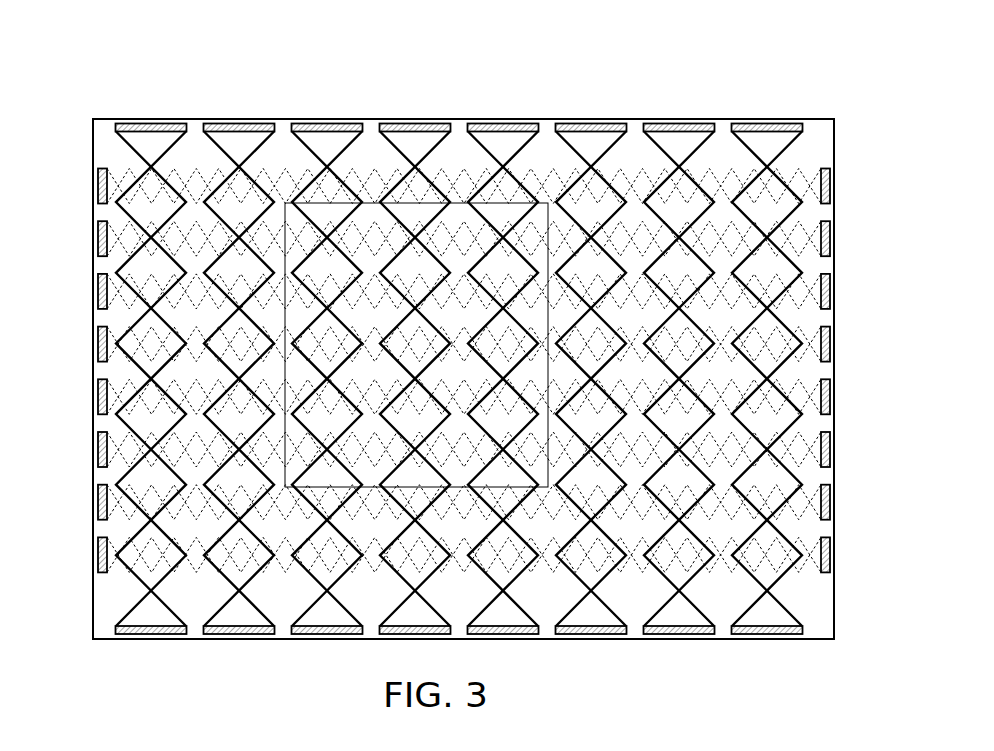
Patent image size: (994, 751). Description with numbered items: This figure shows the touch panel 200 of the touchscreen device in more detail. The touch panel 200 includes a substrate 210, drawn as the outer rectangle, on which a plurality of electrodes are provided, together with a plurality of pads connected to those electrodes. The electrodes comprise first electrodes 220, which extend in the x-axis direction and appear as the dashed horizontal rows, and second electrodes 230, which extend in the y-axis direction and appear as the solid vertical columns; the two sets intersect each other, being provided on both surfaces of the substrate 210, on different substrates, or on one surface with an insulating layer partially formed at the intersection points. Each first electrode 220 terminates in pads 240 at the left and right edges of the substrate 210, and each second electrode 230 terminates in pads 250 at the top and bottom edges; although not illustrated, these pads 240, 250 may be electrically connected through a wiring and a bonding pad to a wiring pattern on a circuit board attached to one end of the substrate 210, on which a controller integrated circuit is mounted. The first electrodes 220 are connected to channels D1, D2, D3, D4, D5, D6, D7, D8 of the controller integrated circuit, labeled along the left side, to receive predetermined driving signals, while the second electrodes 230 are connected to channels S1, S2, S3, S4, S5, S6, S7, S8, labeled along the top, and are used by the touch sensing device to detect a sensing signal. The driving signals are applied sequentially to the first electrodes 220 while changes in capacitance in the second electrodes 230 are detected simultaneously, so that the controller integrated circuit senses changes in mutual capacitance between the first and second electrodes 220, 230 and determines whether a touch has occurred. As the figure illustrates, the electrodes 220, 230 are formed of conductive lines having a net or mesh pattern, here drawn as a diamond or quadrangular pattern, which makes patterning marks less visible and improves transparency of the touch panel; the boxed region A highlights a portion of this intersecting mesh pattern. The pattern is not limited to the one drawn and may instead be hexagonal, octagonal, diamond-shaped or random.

The touch panel 200 is at (749, 54).
The substrate 210 is at (818, 127).
The first electrodes 220 is at (114, 170).
The second electrodes 230 is at (131, 138).
The pads 240 is at (101, 168).
The pads 250 is at (181, 130).
The region A is at (478, 202).
The channel S1 is at (151, 124).
The channel S2 is at (239, 124).
The channel S3 is at (327, 124).
The channel S4 is at (415, 124).
The channel S5 is at (503, 124).
The channel S6 is at (591, 124).
The channel S7 is at (679, 124).
The channel S8 is at (767, 124).
The channel D1 is at (98, 186).
The channel D2 is at (98, 239).
The channel D3 is at (98, 291).
The channel D4 is at (98, 344).
The channel D5 is at (98, 397).
The channel D6 is at (98, 450).
The channel D7 is at (98, 502).
The channel D8 is at (98, 555).